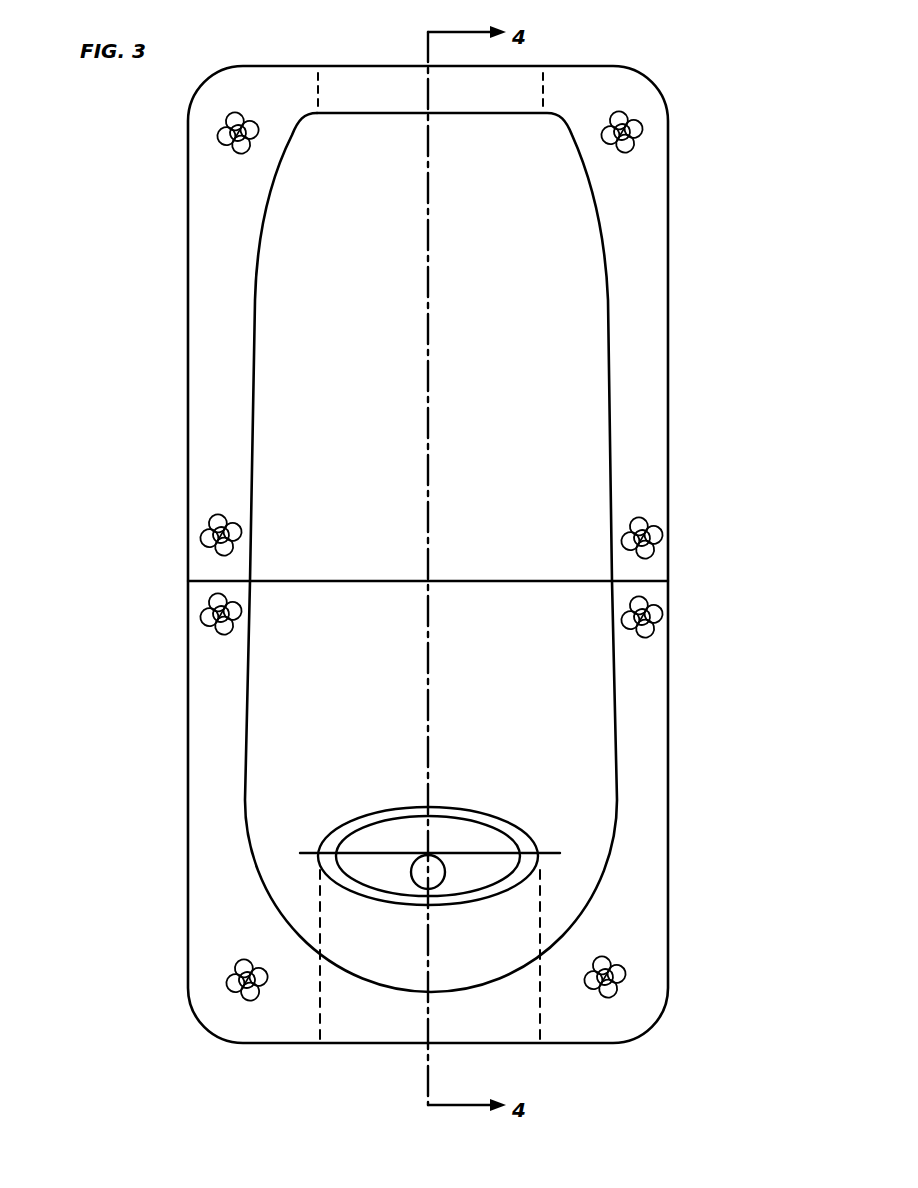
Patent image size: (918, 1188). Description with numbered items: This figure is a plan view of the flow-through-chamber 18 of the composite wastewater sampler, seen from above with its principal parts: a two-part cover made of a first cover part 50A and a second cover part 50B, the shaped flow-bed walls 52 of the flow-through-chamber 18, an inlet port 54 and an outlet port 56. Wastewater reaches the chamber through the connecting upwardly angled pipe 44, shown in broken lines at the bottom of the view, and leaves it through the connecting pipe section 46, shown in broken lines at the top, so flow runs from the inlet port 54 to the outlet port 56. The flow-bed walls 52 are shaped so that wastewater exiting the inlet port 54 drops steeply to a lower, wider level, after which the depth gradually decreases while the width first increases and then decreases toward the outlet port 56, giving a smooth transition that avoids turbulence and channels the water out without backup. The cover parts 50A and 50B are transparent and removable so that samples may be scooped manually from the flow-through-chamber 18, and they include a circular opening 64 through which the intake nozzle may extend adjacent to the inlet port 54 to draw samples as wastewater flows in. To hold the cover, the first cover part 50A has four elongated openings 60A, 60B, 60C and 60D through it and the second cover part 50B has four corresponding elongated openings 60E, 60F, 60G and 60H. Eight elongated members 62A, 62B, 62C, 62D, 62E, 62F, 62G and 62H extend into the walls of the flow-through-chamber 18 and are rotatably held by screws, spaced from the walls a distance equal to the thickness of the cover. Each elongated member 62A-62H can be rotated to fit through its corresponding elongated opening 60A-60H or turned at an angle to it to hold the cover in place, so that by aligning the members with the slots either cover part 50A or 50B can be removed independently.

The flow-through-chamber 18 is at (728, 52).
The connecting upwardly angled pipe 44 is at (317, 1024).
The connecting pipe section 46 is at (352, 84).
The cover part 50A is at (583, 358).
The cover part 50B is at (638, 758).
The flow-bed walls 52 is at (583, 481).
The inlet port 54 is at (470, 840).
The outlet port 56 is at (476, 112).
The elongated opening 60A is at (228, 143).
The elongated opening 60B is at (645, 152).
The elongated opening 60C is at (652, 545).
The elongated opening 60D is at (235, 546).
The elongated opening 60E is at (652, 628).
The elongated opening 60F is at (630, 970).
The elongated opening 60G is at (230, 972).
The elongated opening 60H is at (212, 620).
The elongated member 62A is at (225, 122).
The elongated member 62B is at (642, 113).
The elongated member 62C is at (655, 532).
The elongated member 62D is at (232, 530).
The elongated member 62E is at (655, 610).
The elongated member 62F is at (630, 985).
The elongated member 62G is at (232, 985).
The elongated member 62H is at (208, 608).
The circular opening 64 is at (424, 860).